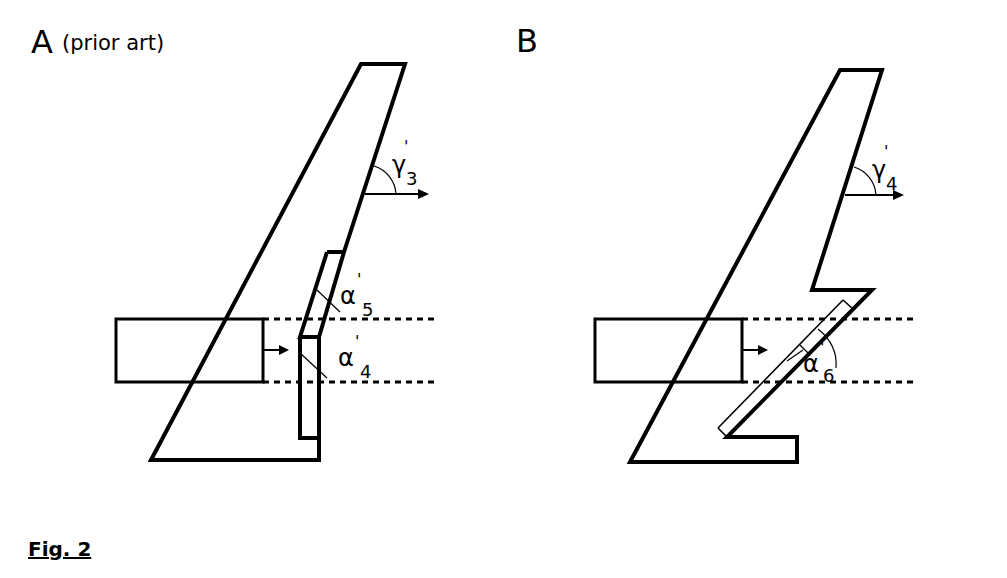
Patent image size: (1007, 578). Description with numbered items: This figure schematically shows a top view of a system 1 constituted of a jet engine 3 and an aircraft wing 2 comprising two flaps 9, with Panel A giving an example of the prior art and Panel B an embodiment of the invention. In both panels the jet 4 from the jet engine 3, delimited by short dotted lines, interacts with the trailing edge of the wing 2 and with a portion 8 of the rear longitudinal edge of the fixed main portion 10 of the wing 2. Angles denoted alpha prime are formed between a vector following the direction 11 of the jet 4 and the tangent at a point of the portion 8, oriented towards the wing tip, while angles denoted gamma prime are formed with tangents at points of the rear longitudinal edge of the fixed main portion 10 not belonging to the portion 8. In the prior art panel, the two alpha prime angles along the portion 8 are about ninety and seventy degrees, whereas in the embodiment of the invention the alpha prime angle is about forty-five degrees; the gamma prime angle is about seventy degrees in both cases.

The system 1 is at (740, 148).
The aircraft wing 2 is at (280, 269).
The jet engine 3 is at (150, 357).
The jet 4 is at (398, 345).
The portion of the rear longitudinal edge 8 is at (318, 393).
The flaps 9 is at (332, 270).
The fixed main portion 10 is at (297, 232).
The direction of the jet 11 is at (268, 383).